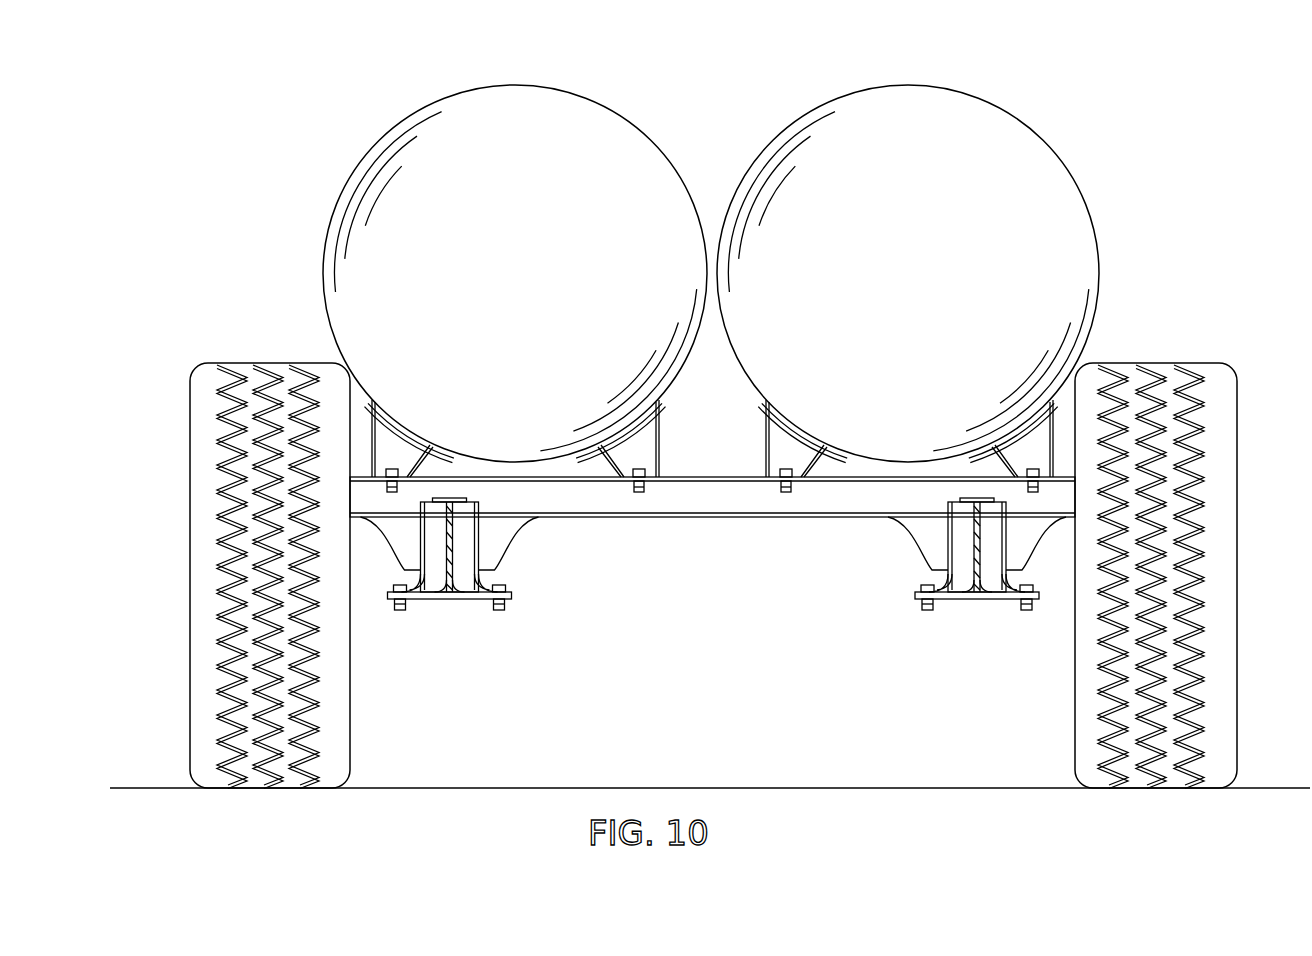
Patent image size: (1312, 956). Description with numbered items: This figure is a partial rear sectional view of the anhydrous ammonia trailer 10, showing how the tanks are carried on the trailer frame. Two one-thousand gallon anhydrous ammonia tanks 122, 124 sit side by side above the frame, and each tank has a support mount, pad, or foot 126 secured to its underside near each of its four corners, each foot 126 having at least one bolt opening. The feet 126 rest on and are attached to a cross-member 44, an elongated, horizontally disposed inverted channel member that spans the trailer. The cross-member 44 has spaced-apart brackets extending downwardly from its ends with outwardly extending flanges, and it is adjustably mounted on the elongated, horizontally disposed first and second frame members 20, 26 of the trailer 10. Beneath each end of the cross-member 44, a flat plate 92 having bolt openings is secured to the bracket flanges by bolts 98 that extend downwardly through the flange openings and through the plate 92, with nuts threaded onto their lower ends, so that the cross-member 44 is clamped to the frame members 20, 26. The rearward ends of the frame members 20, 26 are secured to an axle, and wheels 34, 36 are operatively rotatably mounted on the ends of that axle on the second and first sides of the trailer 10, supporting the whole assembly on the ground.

The trailer 10 is at (1207, 283).
The first frame member 20 is at (957, 545).
The second frame member 26 is at (468, 557).
The wheel 34 is at (1237, 433).
The wheel 36 is at (202, 493).
The cross-member 44 is at (802, 503).
The flat plate 92 is at (449, 615).
The bolt 98 is at (977, 607).
The anhydrous ammonia tank 122 is at (1052, 130).
The anhydrous ammonia tank 124 is at (650, 125).
The support mount, pad, or foot 126 is at (374, 437).